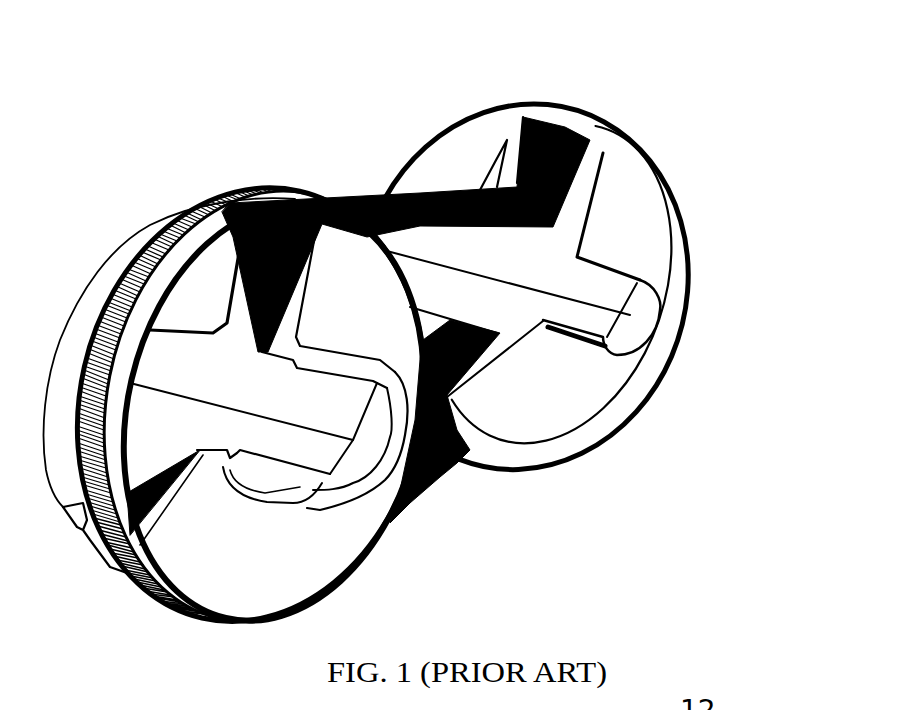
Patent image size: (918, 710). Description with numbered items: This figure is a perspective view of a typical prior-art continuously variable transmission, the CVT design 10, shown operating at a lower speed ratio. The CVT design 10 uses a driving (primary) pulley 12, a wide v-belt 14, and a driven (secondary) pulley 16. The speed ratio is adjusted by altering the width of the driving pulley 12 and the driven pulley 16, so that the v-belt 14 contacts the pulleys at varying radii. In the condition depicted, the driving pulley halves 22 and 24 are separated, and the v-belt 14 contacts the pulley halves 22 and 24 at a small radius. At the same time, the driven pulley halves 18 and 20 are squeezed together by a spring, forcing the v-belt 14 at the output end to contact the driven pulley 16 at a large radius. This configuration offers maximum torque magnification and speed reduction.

The CVT design 10 is at (658, 78).
The driving pulley 12 is at (652, 414).
The v-belt 14 is at (360, 204).
The driven pulley 16 is at (222, 630).
The driven pulley half 18 is at (134, 252).
The driven pulley half 20 is at (362, 540).
The driving pulley half 22 is at (427, 164).
The driving pulley half 24 is at (670, 243).